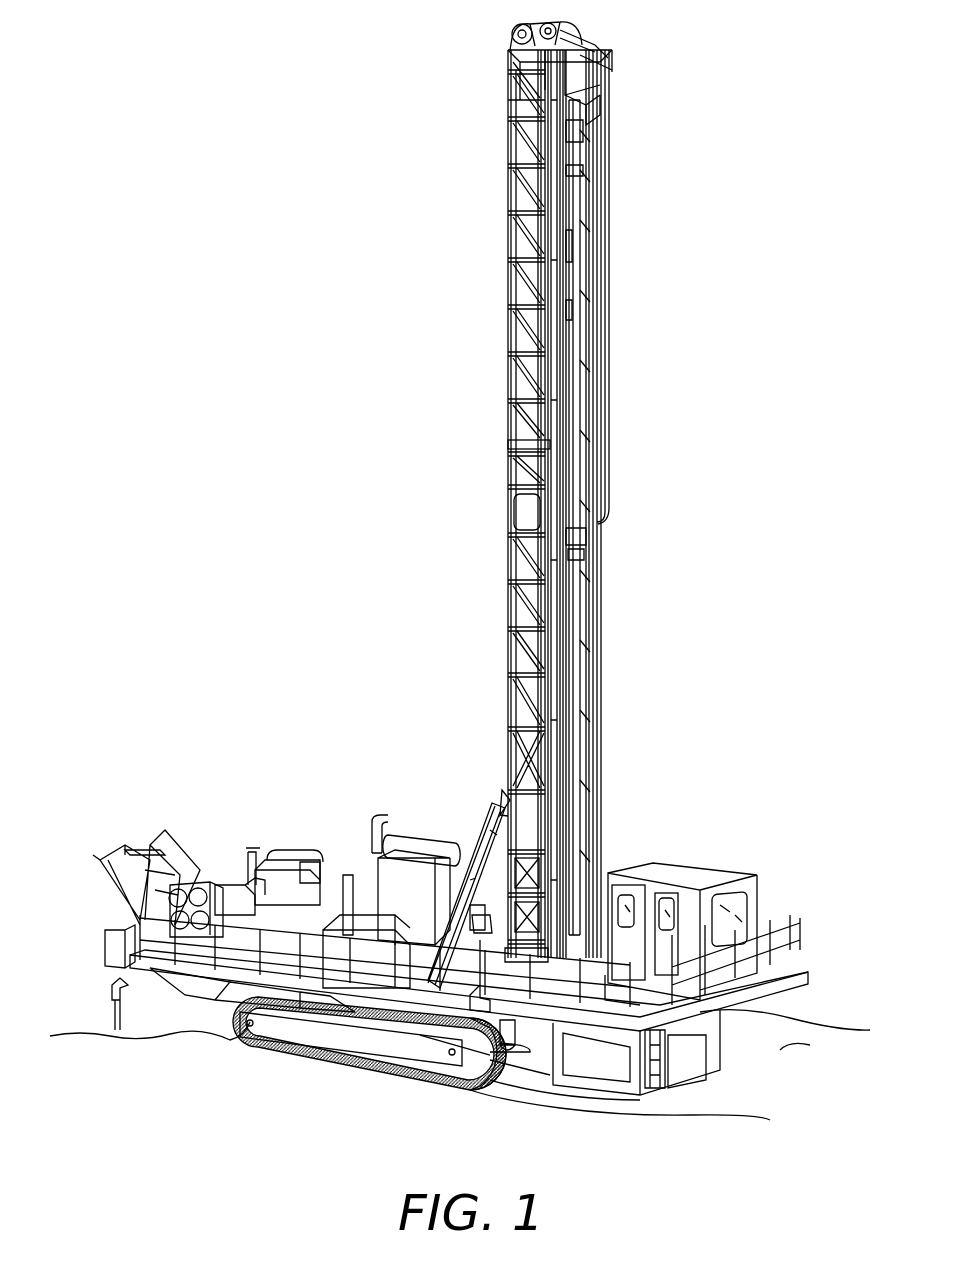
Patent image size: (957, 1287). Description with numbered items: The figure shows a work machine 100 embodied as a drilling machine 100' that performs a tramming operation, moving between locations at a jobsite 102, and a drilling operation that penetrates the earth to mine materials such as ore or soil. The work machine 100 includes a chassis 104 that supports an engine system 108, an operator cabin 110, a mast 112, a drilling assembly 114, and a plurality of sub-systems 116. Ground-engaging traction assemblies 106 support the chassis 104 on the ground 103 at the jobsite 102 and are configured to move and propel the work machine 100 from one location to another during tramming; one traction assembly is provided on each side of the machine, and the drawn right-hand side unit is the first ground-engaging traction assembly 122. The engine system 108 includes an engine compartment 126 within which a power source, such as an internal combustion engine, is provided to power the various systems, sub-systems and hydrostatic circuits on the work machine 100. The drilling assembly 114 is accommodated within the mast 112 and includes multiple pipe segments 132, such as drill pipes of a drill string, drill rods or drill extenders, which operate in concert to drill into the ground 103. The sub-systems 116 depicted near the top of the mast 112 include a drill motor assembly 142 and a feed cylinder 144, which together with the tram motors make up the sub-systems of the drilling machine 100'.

The work machine 100 is at (134, 95).
The drilling machine 100' is at (241, 110).
The jobsite 102 is at (88, 1035).
The ground 103 is at (601, 1055).
The chassis 104 is at (805, 978).
The ground-engaging traction assemblies 106 is at (236, 1011).
The engine system 108 is at (425, 832).
The operator cabin 110 is at (708, 862).
The mast 112 is at (507, 336).
The drilling assembly 114 is at (576, 250).
The sub-systems 116 is at (692, 8).
The first ground-engaging traction assembly 122 is at (345, 1070).
The engine compartment 126 is at (372, 860).
The pipe segments 132 is at (575, 280).
The drill motor assembly 142 is at (600, 86).
The feed cylinder 144 is at (613, 63).